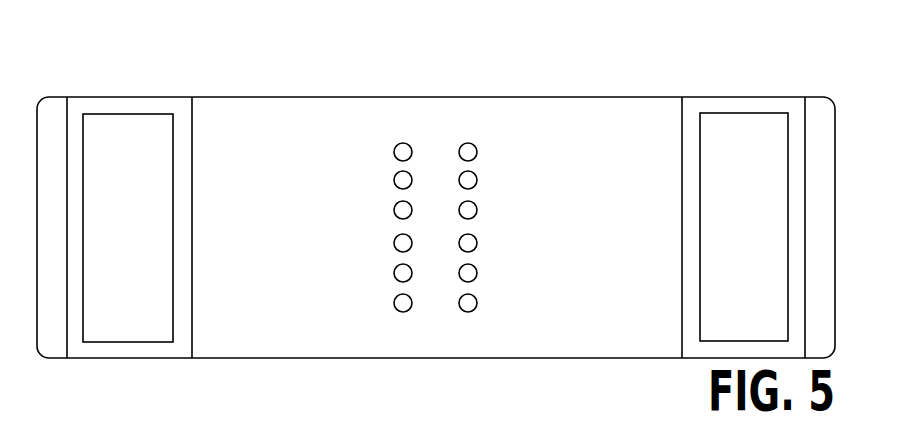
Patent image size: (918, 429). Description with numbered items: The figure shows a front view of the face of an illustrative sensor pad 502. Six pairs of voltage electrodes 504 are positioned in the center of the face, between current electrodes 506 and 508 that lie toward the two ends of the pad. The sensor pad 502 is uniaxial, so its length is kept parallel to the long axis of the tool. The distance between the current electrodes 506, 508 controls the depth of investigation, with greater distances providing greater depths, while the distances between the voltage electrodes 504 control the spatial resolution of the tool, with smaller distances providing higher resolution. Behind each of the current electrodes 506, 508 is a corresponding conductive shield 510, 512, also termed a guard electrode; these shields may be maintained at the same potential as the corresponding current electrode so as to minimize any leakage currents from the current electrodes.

The sensor pad 502 is at (297, 97).
The voltage electrodes 504 is at (467, 143).
The current electrode 506 is at (108, 113).
The current electrode 508 is at (698, 128).
The conductive shield 510 is at (173, 102).
The conductive shield 512 is at (730, 102).